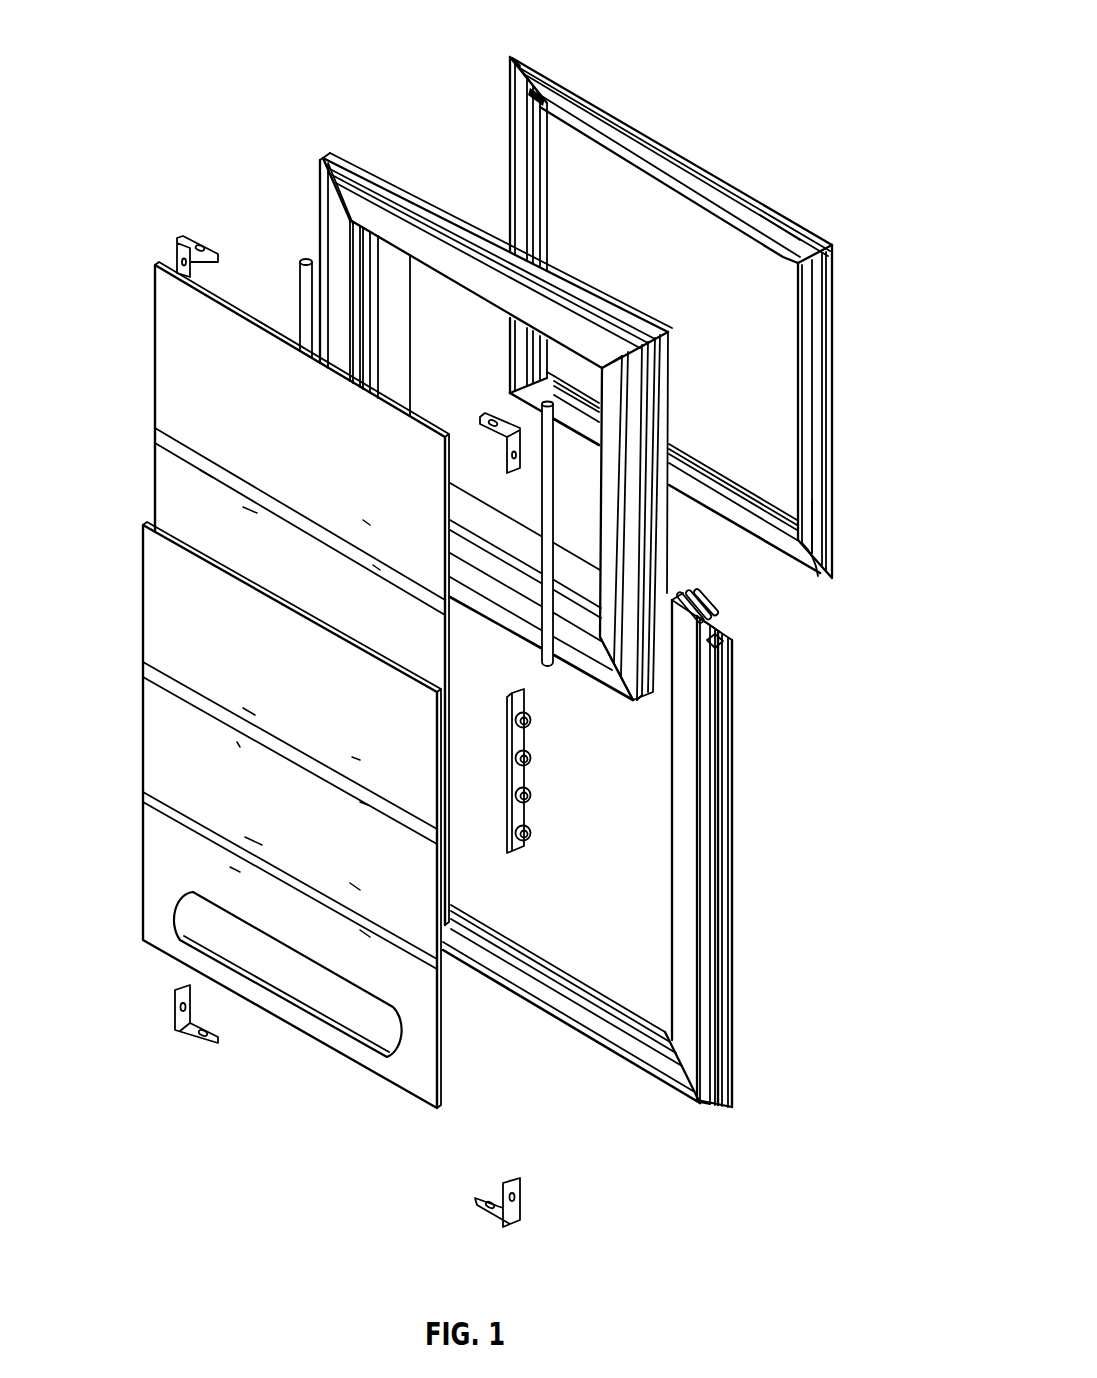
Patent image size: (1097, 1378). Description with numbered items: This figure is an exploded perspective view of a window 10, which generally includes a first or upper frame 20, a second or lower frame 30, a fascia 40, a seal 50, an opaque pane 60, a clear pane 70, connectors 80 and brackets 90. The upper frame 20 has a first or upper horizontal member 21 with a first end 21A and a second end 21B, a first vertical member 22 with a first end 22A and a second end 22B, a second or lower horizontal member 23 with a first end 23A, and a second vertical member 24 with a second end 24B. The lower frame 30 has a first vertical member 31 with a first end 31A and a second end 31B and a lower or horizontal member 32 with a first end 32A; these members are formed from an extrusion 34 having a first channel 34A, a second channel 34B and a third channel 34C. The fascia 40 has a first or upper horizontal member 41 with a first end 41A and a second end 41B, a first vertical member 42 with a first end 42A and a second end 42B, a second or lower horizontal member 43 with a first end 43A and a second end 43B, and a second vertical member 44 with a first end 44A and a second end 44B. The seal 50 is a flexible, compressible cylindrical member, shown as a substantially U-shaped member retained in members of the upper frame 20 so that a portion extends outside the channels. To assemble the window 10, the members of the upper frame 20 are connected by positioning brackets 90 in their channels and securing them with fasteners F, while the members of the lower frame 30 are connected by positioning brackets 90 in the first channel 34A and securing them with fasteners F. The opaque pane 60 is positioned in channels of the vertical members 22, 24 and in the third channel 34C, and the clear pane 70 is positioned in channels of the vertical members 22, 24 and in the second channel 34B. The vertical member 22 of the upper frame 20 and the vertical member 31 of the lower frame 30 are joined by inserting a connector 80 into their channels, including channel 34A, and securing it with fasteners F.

The window 10 is at (862, 58).
The upper frame 20 is at (727, 558).
The upper horizontal member 21 is at (372, 203).
The first end of upper horizontal member 21A is at (668, 332).
The second end of upper horizontal member 21B is at (345, 148).
The first vertical member 22 is at (640, 527).
The first end of first vertical member 22A is at (650, 373).
The second end of first vertical member 22B is at (643, 677).
The lower horizontal member 23 is at (523, 593).
The first end of lower horizontal member 23A is at (593, 657).
The second vertical member 24 is at (333, 223).
The second end of second vertical member 24B is at (320, 185).
The lower frame 30 is at (670, 1118).
The first vertical member 31 is at (728, 957).
The first end of first vertical member 31A is at (720, 638).
The second end of first vertical member 31B is at (727, 1093).
The lower horizontal member 32 is at (548, 988).
The first end of lower horizontal member 32A is at (677, 1082).
The extrusion 34 is at (753, 1000).
The first channel 34A is at (718, 641).
The second channel 34B is at (677, 595).
The third channel 34C is at (703, 605).
The fascia 40 is at (763, 90).
The upper horizontal member 41 is at (663, 173).
The first end of upper horizontal member 41A is at (778, 222).
The second end of upper horizontal member 41B is at (545, 87).
The first vertical member 42 is at (837, 338).
The first end of first vertical member 42A is at (833, 257).
The second end of first vertical member 42B is at (825, 520).
The lower horizontal member 43 is at (722, 493).
The first end of lower horizontal member 43A is at (837, 560).
The second end of lower horizontal member 43B is at (540, 397).
The second vertical member 44 is at (520, 172).
The first end of second vertical member 44A is at (518, 355).
The second end of second vertical member 44B is at (512, 87).
The seal 50 is at (303, 253).
The opaque pane 60 is at (153, 362).
The clear pane 70 is at (143, 603).
The connector 80 is at (538, 842).
The bracket 90 is at (195, 238).
The fasteners F is at (532, 800).